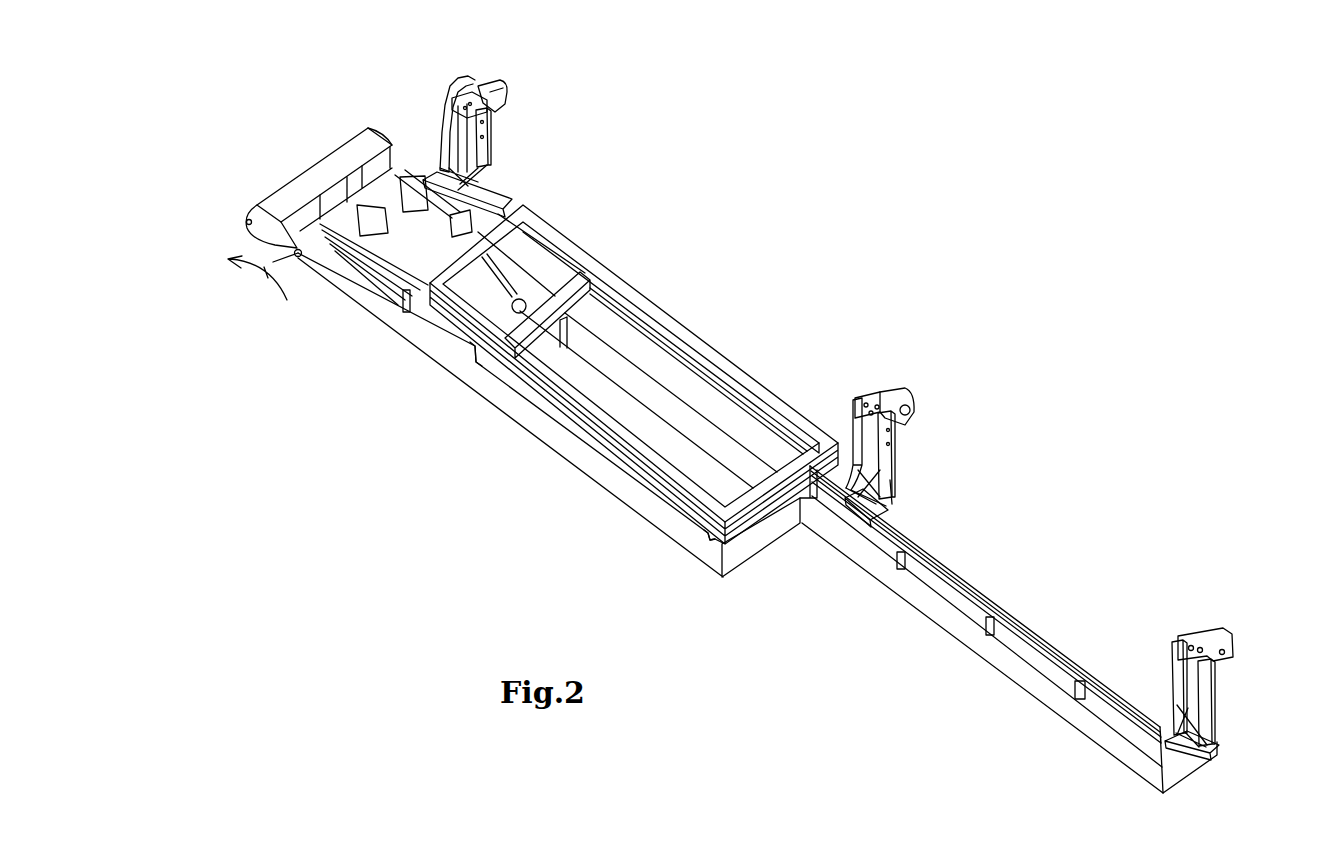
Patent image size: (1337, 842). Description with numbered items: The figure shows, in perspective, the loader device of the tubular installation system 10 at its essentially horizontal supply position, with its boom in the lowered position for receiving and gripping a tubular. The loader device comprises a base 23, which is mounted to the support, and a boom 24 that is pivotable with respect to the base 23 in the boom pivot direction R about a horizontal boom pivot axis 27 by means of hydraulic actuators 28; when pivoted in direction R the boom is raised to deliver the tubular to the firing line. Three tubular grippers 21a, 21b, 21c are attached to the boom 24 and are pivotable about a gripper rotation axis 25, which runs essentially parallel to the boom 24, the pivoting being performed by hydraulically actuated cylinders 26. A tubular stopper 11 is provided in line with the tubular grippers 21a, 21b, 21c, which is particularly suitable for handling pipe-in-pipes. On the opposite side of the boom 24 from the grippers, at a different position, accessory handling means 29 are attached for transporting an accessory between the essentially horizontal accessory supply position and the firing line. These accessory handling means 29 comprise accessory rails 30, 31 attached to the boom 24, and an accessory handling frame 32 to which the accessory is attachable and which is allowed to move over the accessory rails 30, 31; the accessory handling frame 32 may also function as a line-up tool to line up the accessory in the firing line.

The tubular installation system 10 is at (761, 427).
The tubular stopper 11 is at (450, 84).
The tubular gripper 21a is at (1208, 636).
The tubular gripper 21b is at (888, 400).
The tubular gripper 21c is at (488, 117).
The base 23 is at (319, 188).
The boom 24 is at (913, 595).
The gripper rotation axis 25 is at (487, 197).
The hydraulically actuated cylinders 26 is at (487, 178).
The horizontal boom pivot axis 27 is at (243, 288).
The hydraulic actuators 28 is at (465, 195).
The accessory handling means 29 is at (642, 505).
The accessory rail 30 is at (717, 543).
The accessory rail 31 is at (483, 365).
The accessory handling frame 32 is at (583, 407).